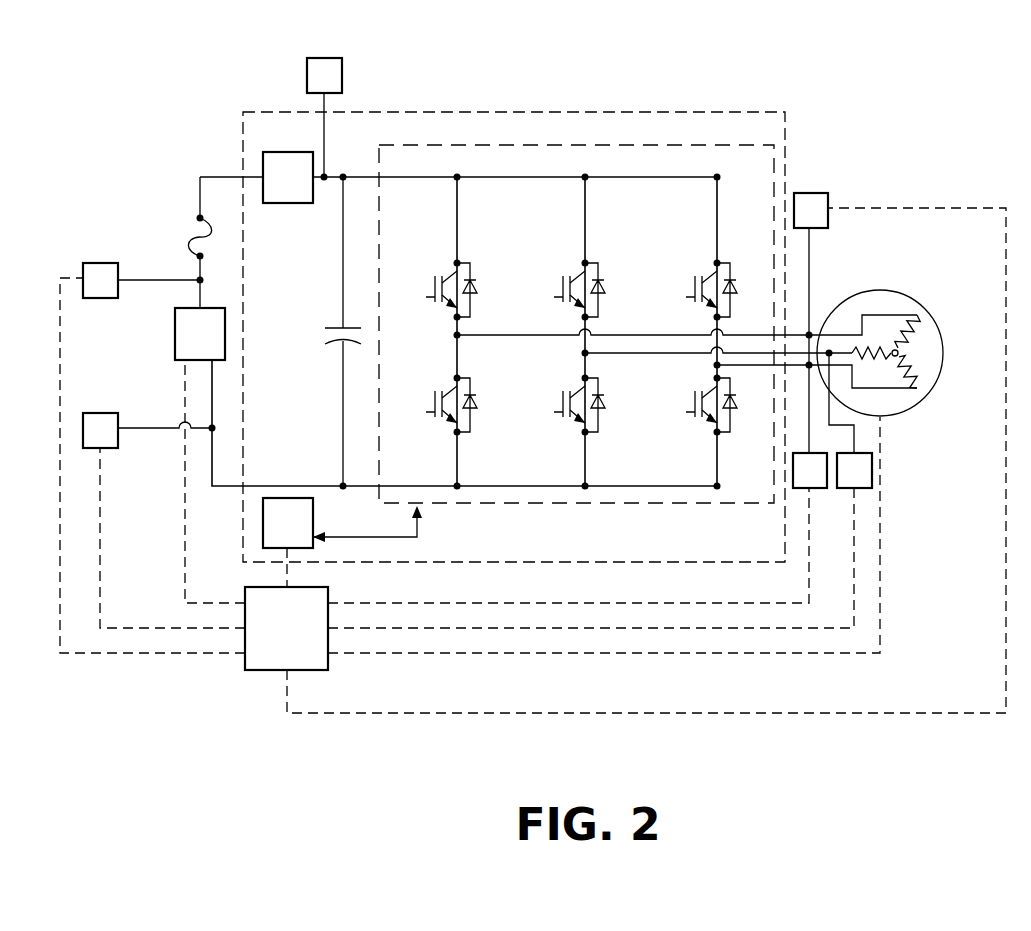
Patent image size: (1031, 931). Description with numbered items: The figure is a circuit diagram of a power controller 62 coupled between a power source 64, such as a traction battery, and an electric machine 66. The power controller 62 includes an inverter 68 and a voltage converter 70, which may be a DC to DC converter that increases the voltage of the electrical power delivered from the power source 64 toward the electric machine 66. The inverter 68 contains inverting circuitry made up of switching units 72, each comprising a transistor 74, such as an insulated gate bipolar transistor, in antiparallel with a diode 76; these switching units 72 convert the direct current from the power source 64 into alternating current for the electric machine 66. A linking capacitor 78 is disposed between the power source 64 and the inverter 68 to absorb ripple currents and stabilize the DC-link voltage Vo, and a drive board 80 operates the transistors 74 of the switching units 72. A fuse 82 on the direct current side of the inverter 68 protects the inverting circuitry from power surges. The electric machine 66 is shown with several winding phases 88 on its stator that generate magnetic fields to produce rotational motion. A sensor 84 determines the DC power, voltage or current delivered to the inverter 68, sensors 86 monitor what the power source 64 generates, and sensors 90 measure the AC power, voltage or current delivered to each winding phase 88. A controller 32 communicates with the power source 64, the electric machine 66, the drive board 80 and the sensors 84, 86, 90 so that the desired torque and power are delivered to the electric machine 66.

The controller 32 is at (245, 593).
The power controller 62 is at (672, 112).
The power source 64 is at (446, 397).
The electric machine 66 is at (880, 290).
The inverter 68 is at (607, 145).
The voltage converter 70 is at (458, 172).
The switching unit 72 is at (701, 261).
The transistor 74 is at (686, 297).
The diode 76 is at (736, 290).
The linking capacitor 78 is at (336, 327).
The drive board 80 is at (342, 523).
The fuse 82 is at (196, 238).
The sensor 84 is at (342, 72).
The sensors 86 is at (83, 276).
The winding phase 88 is at (880, 350).
The sensors 90 is at (828, 206).